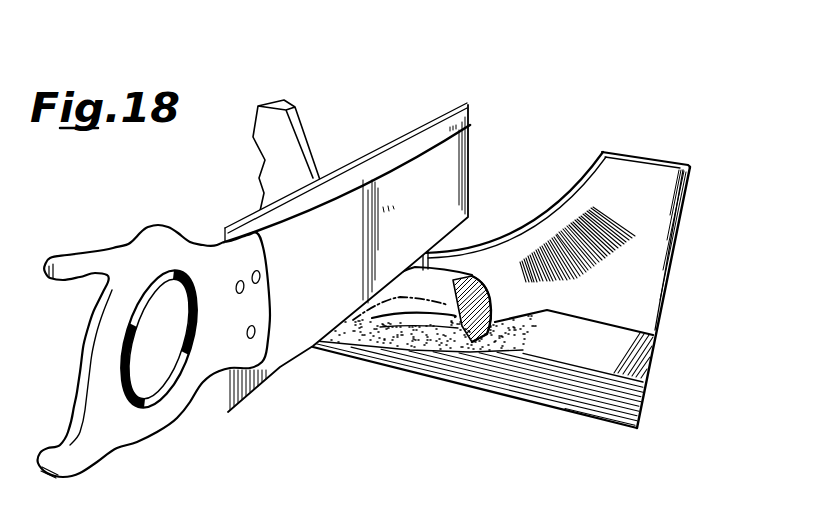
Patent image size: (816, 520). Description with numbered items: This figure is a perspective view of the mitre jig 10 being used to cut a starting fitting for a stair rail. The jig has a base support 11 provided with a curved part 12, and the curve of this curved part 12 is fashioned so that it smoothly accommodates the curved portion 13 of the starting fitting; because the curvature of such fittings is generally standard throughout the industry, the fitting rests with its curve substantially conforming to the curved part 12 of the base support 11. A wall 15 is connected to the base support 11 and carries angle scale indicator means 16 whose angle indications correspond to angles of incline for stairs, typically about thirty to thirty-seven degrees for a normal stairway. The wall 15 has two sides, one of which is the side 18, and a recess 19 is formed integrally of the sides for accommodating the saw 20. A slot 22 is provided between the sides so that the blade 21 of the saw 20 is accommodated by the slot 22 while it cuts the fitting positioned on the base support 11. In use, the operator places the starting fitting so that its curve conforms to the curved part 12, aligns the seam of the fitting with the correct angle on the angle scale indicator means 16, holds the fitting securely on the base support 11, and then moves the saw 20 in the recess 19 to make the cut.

The mitre jig 10 is at (689, 153).
The base support 11 is at (607, 407).
The curved part 12 is at (497, 357).
The curved portion of a starting fitting 13 is at (415, 318).
The wall 15 is at (618, 312).
The angle scale indicator means 16 is at (615, 208).
The side of the wall 18 is at (654, 279).
The recess 19 is at (483, 247).
The saw 20 is at (388, 148).
The blade 21 is at (297, 352).
The slot 22 is at (447, 243).